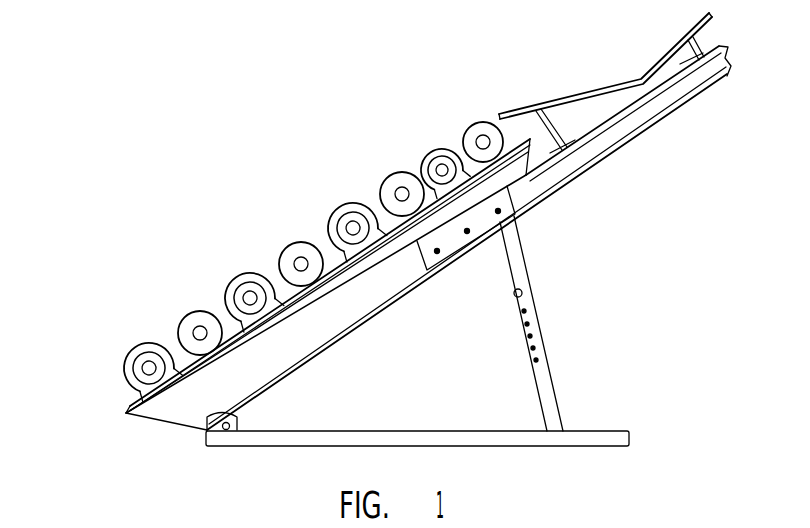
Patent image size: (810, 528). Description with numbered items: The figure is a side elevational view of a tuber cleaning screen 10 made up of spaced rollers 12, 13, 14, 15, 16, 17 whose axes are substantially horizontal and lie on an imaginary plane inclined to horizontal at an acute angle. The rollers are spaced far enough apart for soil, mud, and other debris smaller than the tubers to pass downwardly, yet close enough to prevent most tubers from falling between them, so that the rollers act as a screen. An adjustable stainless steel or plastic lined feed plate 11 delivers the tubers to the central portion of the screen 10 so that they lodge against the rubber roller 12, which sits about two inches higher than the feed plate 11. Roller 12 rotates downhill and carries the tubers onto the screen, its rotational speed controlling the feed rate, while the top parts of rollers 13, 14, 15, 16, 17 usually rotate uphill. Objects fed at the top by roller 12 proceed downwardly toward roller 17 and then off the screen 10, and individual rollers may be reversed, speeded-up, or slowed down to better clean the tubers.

The tuber cleaning screen 10 is at (200, 158).
The adjustable feed plate 11 is at (604, 82).
The rubber roller 12 is at (470, 124).
The roller 13 is at (428, 150).
The roller 14 is at (386, 178).
The roller 15 is at (333, 205).
The roller 16 is at (282, 245).
The roller 17 is at (126, 352).